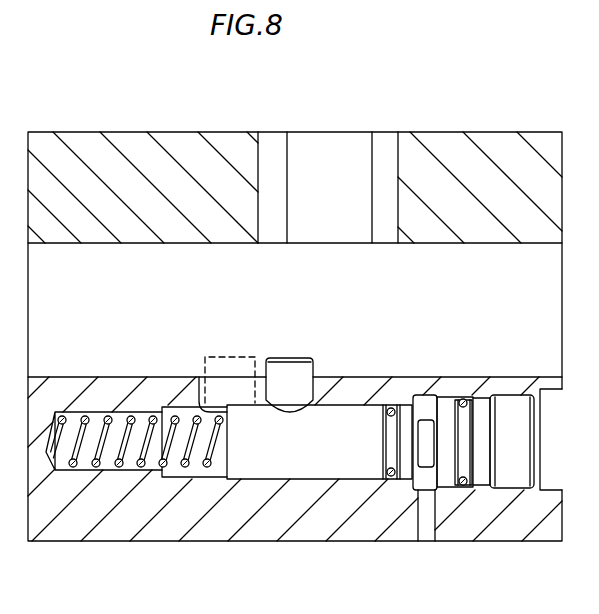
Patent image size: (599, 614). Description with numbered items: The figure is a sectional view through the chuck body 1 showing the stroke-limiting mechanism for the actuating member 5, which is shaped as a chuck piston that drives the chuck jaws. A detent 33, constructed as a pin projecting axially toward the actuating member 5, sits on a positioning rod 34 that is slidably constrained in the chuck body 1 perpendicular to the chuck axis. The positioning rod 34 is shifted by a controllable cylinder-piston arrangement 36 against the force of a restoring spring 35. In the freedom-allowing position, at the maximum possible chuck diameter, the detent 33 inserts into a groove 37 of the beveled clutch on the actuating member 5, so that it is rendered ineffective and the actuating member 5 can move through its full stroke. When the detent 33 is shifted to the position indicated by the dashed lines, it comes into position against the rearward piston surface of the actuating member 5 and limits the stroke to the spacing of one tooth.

The chuck body 1 is at (213, 526).
The actuating member 5 is at (462, 152).
The detent 33 is at (290, 373).
The positioning rod 34 is at (300, 463).
The restoring spring 35 is at (115, 472).
The cylinder-piston arrangement 36 is at (410, 487).
The groove 37 is at (338, 232).